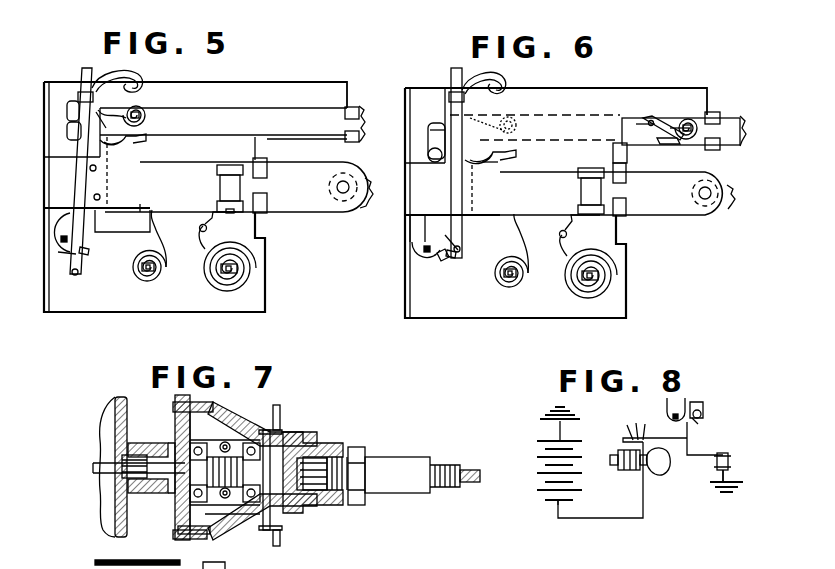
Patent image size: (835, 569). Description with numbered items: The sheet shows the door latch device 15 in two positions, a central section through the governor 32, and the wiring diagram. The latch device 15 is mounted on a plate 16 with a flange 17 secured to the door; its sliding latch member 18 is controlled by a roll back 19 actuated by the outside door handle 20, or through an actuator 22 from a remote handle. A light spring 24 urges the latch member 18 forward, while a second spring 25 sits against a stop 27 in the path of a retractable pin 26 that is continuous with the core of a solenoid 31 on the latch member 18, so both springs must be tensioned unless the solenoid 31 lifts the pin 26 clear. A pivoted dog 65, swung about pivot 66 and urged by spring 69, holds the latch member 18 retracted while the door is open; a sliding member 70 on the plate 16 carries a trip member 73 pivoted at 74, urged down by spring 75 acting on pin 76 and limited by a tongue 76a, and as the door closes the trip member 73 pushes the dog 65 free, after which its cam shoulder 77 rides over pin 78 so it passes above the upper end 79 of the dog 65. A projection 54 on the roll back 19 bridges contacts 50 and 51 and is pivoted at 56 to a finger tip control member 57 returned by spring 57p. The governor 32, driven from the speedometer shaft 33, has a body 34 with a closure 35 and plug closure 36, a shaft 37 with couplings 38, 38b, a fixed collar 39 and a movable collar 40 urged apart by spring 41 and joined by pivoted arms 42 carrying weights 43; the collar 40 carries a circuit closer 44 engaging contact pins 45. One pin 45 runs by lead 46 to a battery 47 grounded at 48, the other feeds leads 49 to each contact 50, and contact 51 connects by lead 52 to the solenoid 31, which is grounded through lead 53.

In FIG. 5, the latch device 15 is at (295, 77).
In FIG. 6, the latch device 15 is at (660, 84).
In FIG. 5, the plate 16 is at (252, 88).
In FIG. 6, the plate 16 is at (611, 92).
In FIG. 5, the flange 17 is at (44, 294).
In FIG. 6, the flange 17 is at (404, 300).
In FIG. 5, the sliding latch member 18 is at (170, 208).
In FIG. 6, the sliding latch member 18 is at (684, 212).
In FIG. 5, the roll back 19 is at (60, 217).
In FIG. 6, the roll back 19 is at (410, 222).
In FIG. 8, the roll back 19 is at (667, 403).
In FIG. 5, the outside door handle 20 is at (60, 239).
In FIG. 6, the outside door handle 20 is at (424, 250).
In FIG. 5, the actuator 22 is at (370, 200).
In FIG. 6, the actuator 22 is at (738, 198).
In FIG. 5, the spring 24 is at (160, 287).
In FIG. 6, the spring 24 is at (517, 292).
In FIG. 5, the spring 25 is at (209, 288).
In FIG. 6, the spring 25 is at (566, 294).
In FIG. 5, the retractable pin 26 is at (230, 215).
In FIG. 5, the stop 27 is at (201, 233).
In FIG. 6, the stop 27 is at (559, 234).
In FIG. 5, the solenoid 31 is at (220, 185).
In FIG. 6, the solenoid 31 is at (580, 186).
In FIG. 8, the solenoid 31 is at (729, 462).
In FIG. 7, the governor 32 is at (309, 441).
In FIG. 8, the governor 32 is at (612, 475).
In FIG. 7, the speedometer drive shaft 33 is at (93, 468).
In FIG. 7, the body 34 is at (232, 422).
In FIG. 7, the closure 35 is at (178, 513).
In FIG. 7, the plug closure 36 is at (356, 506).
In FIG. 7, the shaft 37 is at (156, 450).
In FIG. 7, the coupling 38 is at (115, 480).
In FIG. 7, the coupling 38b is at (306, 510).
In FIG. 7, the collar 39 is at (203, 501).
In FIG. 7, the movable collar 40 is at (252, 515).
In FIG. 7, the spring 41 is at (216, 446).
In FIG. 7, the pivoted arms 42 is at (240, 532).
In FIG. 7, the governor weights 43 is at (205, 540).
In FIG. 7, the circuit closer 44 is at (284, 531).
In FIG. 7, the contact pins 45 is at (281, 415).
In FIG. 8, the contact pins 45 is at (664, 455).
In FIG. 8, the lead 46 is at (645, 505).
In FIG. 8, the battery 47 is at (575, 492).
In FIG. 8, the ground 48 is at (580, 432).
In FIG. 8, the leads 49 is at (642, 423).
In FIG. 6, the contact 50 is at (439, 262).
In FIG. 8, the contact 50 is at (679, 424).
In FIG. 5, the second contact 51 is at (90, 251).
In FIG. 6, the second contact 51 is at (452, 256).
In FIG. 8, the second contact 51 is at (703, 420).
In FIG. 8, the lead 52 is at (690, 456).
In FIG. 8, the lead 53 is at (735, 480).
In FIG. 5, the projection 54 is at (66, 259).
In FIG. 6, the projection 54 is at (446, 236).
In FIG. 8, the projection 54 is at (703, 405).
In FIG. 5, the pivot 56 is at (76, 277).
In FIG. 6, the pivot 56 is at (461, 250).
In FIG. 5, the finger tip control member 57 is at (88, 66).
In FIG. 6, the finger tip control member 57 is at (456, 66).
In FIG. 8, the finger tip control member 57 is at (705, 416).
In FIG. 5, the spring 57p is at (141, 82).
In FIG. 6, the spring 57p is at (505, 82).
In FIG. 5, the dog 65 is at (67, 125).
In FIG. 6, the dog 65 is at (428, 136).
In FIG. 6, the pivot 66 is at (435, 163).
In FIG. 6, the spring 69 is at (500, 165).
In FIG. 5, the sliding member 70 is at (308, 110).
In FIG. 6, the sliding member 70 is at (738, 122).
In FIG. 6, the trip member 73 is at (452, 114).
In FIG. 5, the pivot 74 is at (147, 115).
In FIG. 6, the pivot 74 is at (685, 142).
In FIG. 5, the spring 75 is at (147, 122).
In FIG. 6, the spring 75 is at (700, 130).
In FIG. 6, the pin 76 is at (653, 143).
In FIG. 6, the tongue 76a is at (660, 124).
In FIG. 5, the cam shoulder 77 is at (104, 120).
In FIG. 6, the cam shoulder 77 is at (666, 146).
In FIG. 5, the pin 78 is at (113, 149).
In FIG. 6, the pin 78 is at (490, 150).
In FIG. 6, the upper end 79 is at (435, 125).